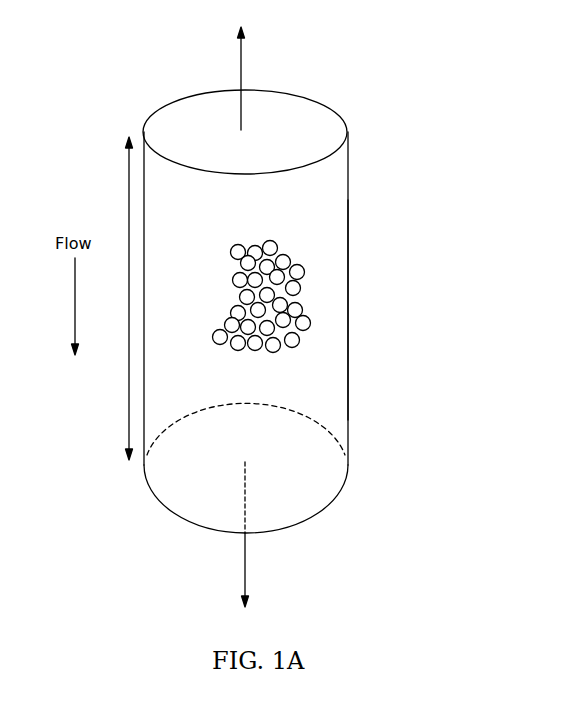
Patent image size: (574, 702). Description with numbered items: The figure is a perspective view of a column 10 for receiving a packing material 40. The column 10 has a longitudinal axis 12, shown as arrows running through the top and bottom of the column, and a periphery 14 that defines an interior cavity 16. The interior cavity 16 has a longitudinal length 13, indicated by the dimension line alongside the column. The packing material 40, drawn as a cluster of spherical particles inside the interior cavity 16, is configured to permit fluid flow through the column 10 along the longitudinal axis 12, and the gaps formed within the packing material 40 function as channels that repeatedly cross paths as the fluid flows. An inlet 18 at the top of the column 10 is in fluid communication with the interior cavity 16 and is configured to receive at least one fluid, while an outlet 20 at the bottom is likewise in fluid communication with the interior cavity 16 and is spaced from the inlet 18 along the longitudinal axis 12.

The column 10 is at (362, 265).
The longitudinal axis 12 is at (245, 75).
The longitudinal length 13 is at (127, 333).
The periphery 14 is at (348, 347).
The interior cavity 16 is at (200, 257).
The inlet 18 is at (277, 133).
The outlet 20 is at (287, 508).
The packing material 40 is at (300, 255).